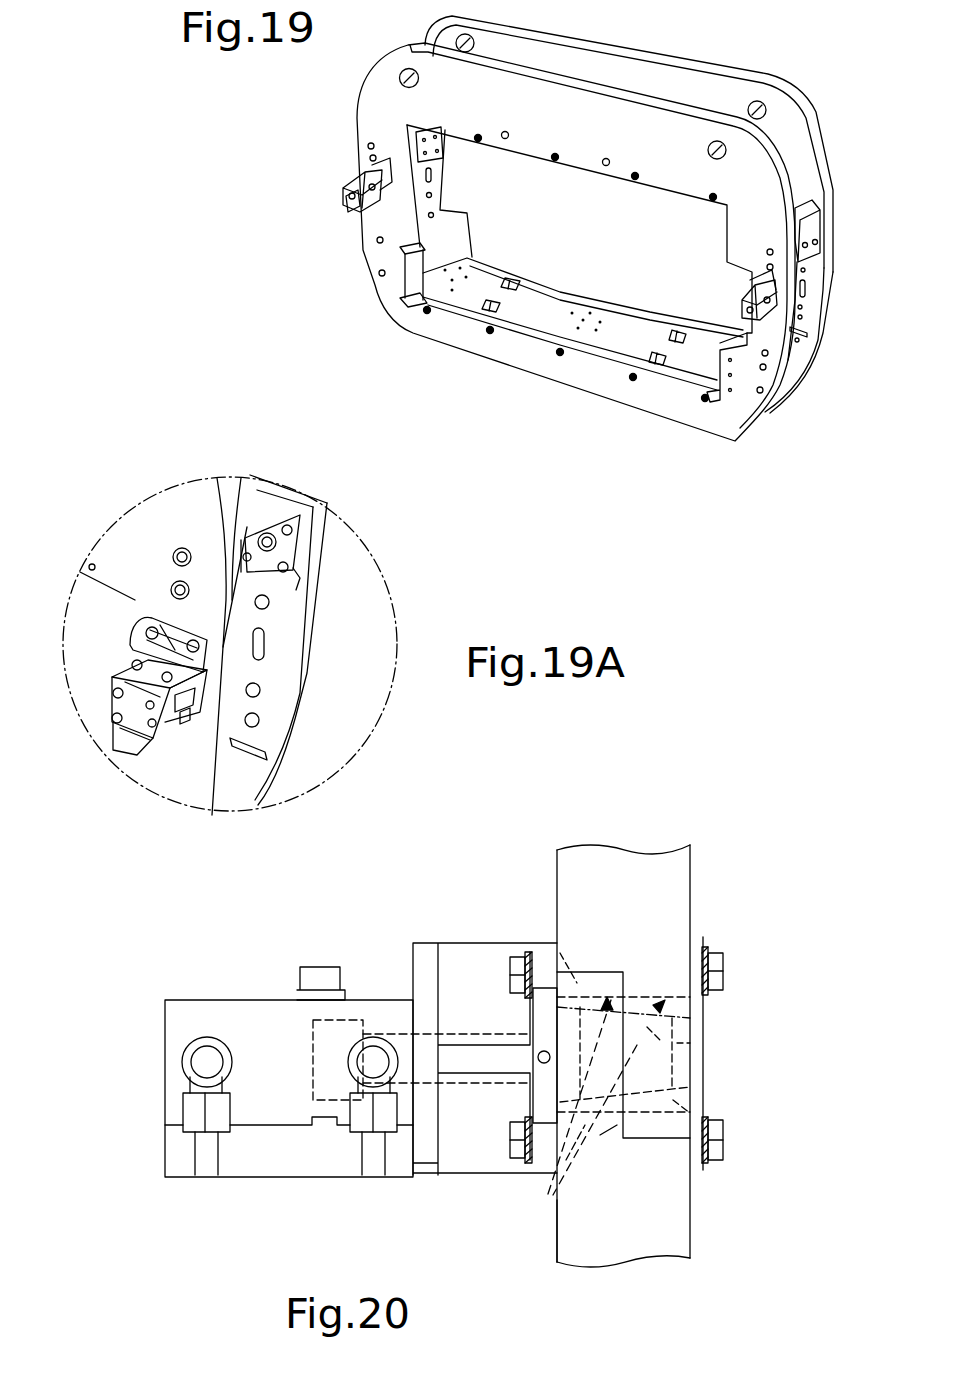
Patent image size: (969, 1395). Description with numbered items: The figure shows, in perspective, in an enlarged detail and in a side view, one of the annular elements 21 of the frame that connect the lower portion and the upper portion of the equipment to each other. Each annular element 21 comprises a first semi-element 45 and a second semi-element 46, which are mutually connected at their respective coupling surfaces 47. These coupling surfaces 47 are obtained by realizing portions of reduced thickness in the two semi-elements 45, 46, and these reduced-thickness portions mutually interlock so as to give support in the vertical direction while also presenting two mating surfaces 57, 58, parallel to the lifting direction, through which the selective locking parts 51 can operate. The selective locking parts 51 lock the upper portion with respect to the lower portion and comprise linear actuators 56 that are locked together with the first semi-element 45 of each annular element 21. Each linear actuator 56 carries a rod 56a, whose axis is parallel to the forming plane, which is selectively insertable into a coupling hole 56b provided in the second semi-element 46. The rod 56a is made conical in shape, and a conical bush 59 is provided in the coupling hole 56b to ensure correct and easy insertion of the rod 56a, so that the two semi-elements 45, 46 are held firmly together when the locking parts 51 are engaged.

In FIG. 19, the annular element 21 is at (655, 122).
In FIG. 19, the first semi-element 45 is at (813, 295).
In FIG. 19A, the first semi-element 45 is at (300, 692).
In FIG. 20, the first semi-element 45 is at (673, 1243).
In FIG. 19, the second semi-element 46 is at (795, 140).
In FIG. 19A, the second semi-element 46 is at (322, 505).
In FIG. 20, the second semi-element 46 is at (668, 873).
In FIG. 19A, the coupling surface 47 is at (160, 603).
In FIG. 20, the coupling surface 47 is at (587, 970).
In FIG. 19, the selective locking part 51 is at (341, 193).
In FIG. 19A, the selective locking part 51 is at (105, 737).
In FIG. 20, the selective locking part 51 is at (313, 1128).
In FIG. 19, the linear actuator 56 is at (347, 204).
In FIG. 19A, the linear actuator 56 is at (137, 722).
In FIG. 20, the linear actuator 56 is at (180, 1030).
In FIG. 20, the rod 56a is at (700, 1043).
In FIG. 20, the coupling hole 56b is at (562, 1172).
In FIG. 20, the mating surface 57 is at (622, 1113).
In FIG. 20, the mating surface 58 is at (622, 990).
In FIG. 20, the conical bush 59 is at (557, 937).